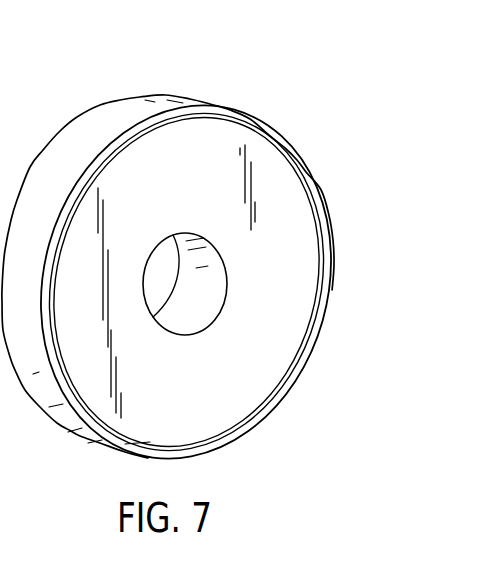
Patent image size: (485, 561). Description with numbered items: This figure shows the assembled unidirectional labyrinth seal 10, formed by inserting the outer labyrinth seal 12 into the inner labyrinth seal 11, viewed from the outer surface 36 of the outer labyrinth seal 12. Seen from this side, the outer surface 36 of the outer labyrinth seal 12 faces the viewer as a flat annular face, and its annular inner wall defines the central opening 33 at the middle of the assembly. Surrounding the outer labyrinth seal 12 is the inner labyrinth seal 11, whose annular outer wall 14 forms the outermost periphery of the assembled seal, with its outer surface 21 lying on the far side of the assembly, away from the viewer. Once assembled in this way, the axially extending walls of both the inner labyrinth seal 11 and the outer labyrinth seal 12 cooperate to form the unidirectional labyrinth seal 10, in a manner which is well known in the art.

The unidirectional labyrinth seal 10 is at (100, 102).
The inner labyrinth seal 11 is at (155, 112).
The outer labyrinth seal 12 is at (262, 160).
The annular outer wall 14 is at (119, 140).
The outer surface 21 is at (42, 383).
The central opening 33 is at (152, 290).
The outer surface 36 is at (268, 187).